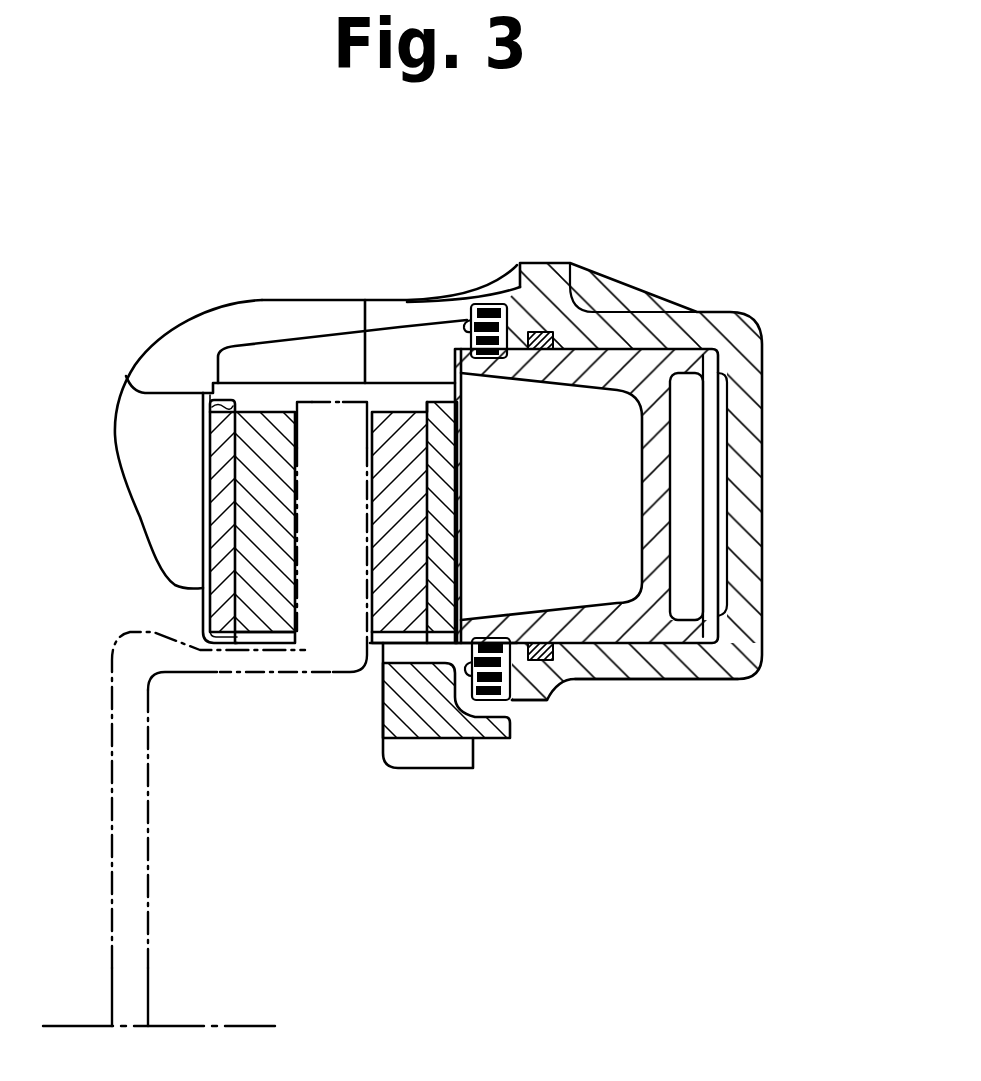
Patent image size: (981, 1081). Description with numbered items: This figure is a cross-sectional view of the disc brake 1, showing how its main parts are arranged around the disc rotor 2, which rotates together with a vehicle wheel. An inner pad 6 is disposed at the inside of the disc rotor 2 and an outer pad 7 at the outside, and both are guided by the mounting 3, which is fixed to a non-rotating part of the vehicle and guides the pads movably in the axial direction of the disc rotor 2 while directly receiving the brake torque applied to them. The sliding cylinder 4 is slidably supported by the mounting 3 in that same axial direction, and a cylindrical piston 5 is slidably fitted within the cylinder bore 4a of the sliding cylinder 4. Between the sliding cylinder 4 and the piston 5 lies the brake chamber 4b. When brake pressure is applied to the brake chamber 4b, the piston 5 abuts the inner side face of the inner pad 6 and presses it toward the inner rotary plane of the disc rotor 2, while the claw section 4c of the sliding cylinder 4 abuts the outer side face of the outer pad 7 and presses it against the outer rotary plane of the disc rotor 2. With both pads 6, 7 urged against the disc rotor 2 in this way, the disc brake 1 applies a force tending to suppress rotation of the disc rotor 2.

The disc brake 1 is at (363, 292).
The disc rotor 2 is at (333, 642).
The mounting 3 is at (490, 727).
The sliding cylinder 4 is at (600, 276).
The cylinder bore 4a is at (615, 647).
The brake chamber 4b is at (685, 560).
The claw section 4c is at (147, 475).
The cylindrical piston 5 is at (658, 378).
The inner pad 6 is at (407, 430).
The outer pad 7 is at (268, 432).